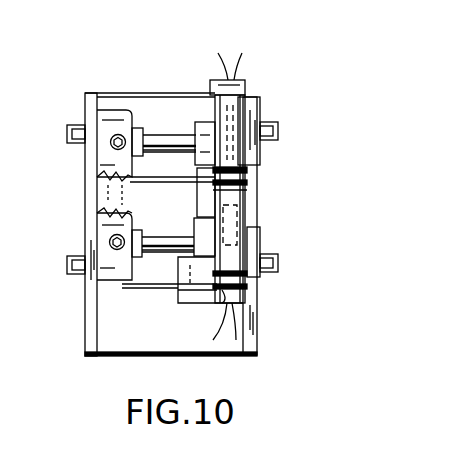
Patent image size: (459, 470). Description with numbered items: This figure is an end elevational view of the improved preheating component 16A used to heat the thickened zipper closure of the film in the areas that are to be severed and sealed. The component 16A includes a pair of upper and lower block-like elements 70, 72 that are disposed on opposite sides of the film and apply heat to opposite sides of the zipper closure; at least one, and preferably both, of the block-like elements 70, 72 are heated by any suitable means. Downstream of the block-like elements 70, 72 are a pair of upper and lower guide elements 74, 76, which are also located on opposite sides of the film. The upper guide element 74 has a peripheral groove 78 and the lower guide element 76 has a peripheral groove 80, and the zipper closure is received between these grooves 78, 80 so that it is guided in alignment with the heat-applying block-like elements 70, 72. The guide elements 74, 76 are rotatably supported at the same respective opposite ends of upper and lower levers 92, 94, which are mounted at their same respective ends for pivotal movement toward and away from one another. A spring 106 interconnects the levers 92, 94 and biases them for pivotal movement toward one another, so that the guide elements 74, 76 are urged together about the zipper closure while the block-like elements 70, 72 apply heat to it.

The preheating component 16A is at (290, 153).
The upper block-like element 70 is at (246, 84).
The lower block-like element 72 is at (244, 297).
The upper guide element 74 is at (244, 176).
The lower guide element 76 is at (250, 213).
The peripheral groove 78 is at (245, 185).
The peripheral groove 80 is at (218, 305).
The upper lever 92 is at (105, 160).
The lower lever 94 is at (100, 229).
The spring 106 is at (118, 212).